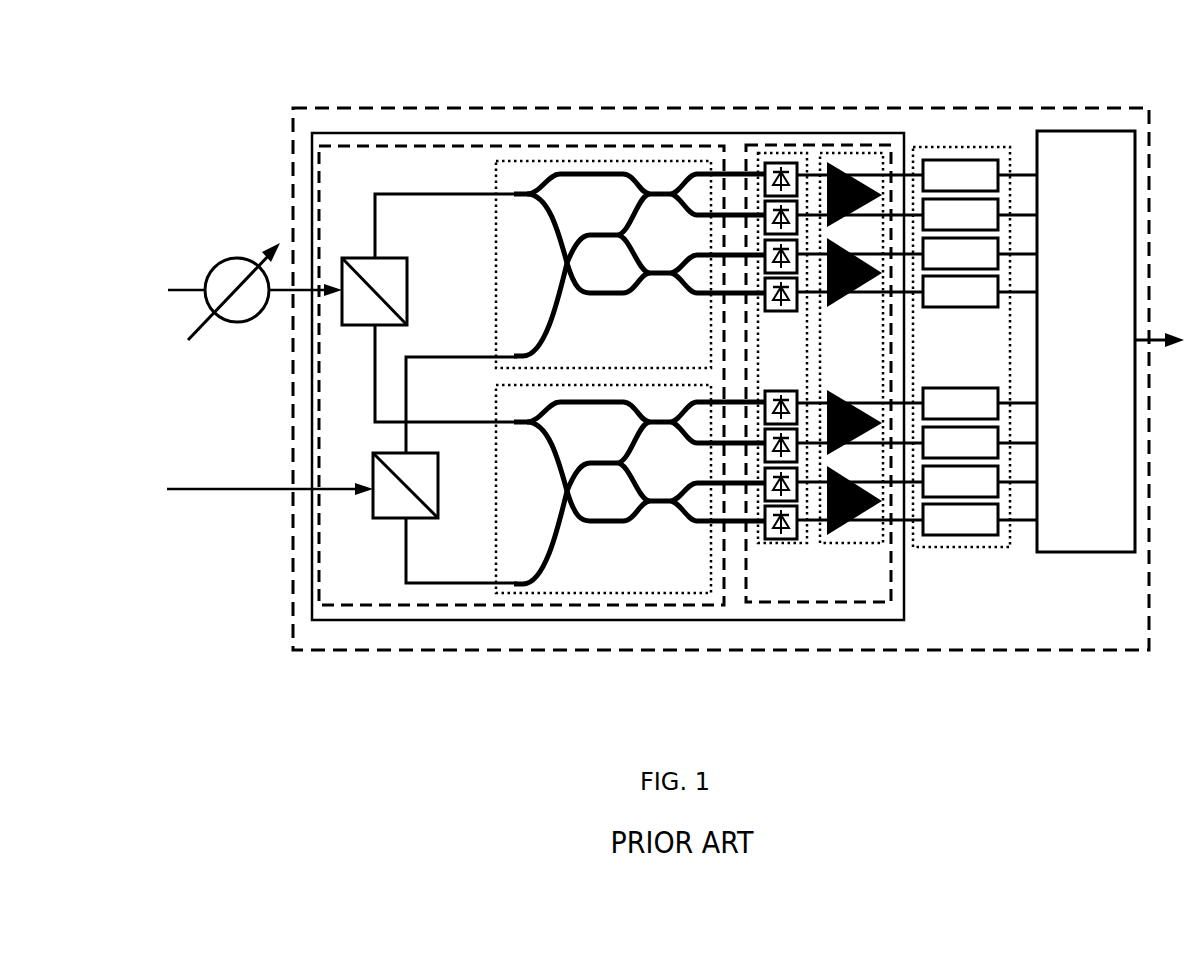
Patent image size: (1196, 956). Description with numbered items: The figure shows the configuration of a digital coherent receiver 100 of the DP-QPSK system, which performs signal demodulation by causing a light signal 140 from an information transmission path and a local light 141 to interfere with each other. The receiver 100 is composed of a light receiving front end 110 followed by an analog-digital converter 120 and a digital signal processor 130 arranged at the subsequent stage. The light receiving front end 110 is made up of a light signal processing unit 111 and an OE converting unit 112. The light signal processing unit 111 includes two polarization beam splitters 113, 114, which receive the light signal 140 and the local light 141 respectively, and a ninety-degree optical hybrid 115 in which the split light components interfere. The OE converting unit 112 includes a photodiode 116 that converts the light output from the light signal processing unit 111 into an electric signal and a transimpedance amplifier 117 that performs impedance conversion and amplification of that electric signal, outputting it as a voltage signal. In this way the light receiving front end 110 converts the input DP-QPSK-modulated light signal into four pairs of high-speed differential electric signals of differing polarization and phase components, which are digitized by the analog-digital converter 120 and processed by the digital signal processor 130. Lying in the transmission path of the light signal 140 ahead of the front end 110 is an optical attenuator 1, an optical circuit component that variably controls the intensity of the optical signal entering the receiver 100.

The optical attenuator 1 is at (232, 258).
The digital coherent receiver 100 is at (687, 107).
The light receiving front end 110 is at (617, 620).
The light signal processing unit 111 is at (415, 607).
The OE converting unit 112 is at (827, 605).
The polarization beam splitter 113 is at (409, 285).
The polarization beam splitter 114 is at (393, 520).
The 90° optical hybrid 115 is at (543, 160).
The photodiode 116 is at (777, 543).
The transimpedance amplifier 117 is at (843, 543).
The analog-digital converter 120 is at (957, 548).
The digital signal processor 130 is at (1077, 553).
The light signal 140 is at (280, 298).
The local light 141 is at (222, 492).